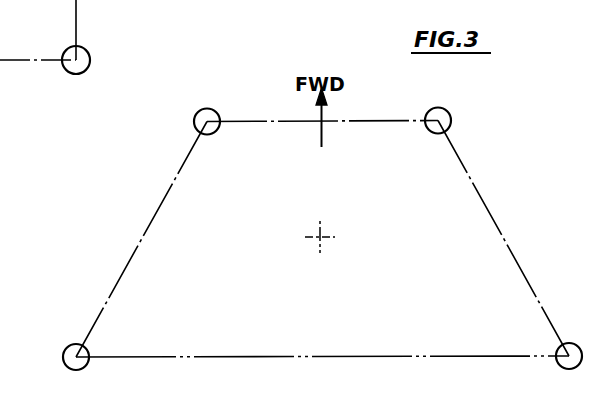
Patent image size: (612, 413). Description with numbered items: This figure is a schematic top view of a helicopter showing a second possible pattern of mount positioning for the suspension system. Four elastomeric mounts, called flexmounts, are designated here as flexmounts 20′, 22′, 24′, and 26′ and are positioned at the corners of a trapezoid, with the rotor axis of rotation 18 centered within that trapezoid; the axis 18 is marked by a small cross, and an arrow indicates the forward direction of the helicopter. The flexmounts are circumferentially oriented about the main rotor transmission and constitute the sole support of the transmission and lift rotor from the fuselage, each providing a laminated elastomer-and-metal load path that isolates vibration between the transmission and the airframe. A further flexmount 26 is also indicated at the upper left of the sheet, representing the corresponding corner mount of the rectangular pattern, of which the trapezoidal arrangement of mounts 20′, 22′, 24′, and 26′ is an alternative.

The flexmount 26 is at (91, 61).
The flexmount 20′ is at (194, 121).
The flexmount 24′ is at (451, 121).
The flexmount 22′ is at (65, 365).
The flexmount 26′ is at (560, 366).
The rotor axis of rotation 18 is at (321, 236).